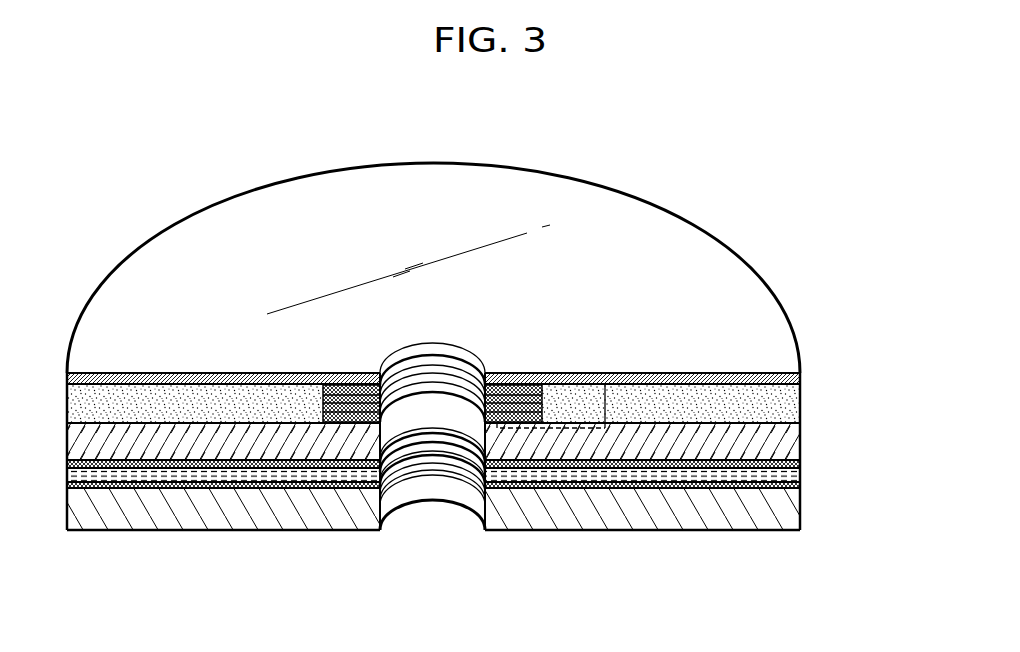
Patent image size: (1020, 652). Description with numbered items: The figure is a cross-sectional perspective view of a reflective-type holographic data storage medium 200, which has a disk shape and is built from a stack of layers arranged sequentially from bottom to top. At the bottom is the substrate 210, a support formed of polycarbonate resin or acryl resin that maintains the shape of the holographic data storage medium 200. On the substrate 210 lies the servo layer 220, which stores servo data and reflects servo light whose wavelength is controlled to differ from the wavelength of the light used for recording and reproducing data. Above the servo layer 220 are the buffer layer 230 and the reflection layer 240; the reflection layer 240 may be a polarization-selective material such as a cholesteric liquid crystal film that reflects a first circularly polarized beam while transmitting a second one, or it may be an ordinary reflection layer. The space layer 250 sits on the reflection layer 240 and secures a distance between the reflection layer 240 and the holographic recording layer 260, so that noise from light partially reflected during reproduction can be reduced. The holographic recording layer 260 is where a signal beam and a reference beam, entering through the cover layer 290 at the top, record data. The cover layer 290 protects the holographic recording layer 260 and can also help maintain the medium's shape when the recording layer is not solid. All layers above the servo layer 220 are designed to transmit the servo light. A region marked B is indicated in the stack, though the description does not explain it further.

The holographic data storage medium 200 is at (812, 152).
The substrate 210 is at (790, 509).
The servo layer 220 is at (798, 487).
The buffer layer 230 is at (798, 475).
The reflection layer 240 is at (798, 462).
The space layer 250 is at (787, 443).
The holographic recording layer 260 is at (807, 400).
The cover layer 290 is at (800, 377).
The region B is at (557, 428).